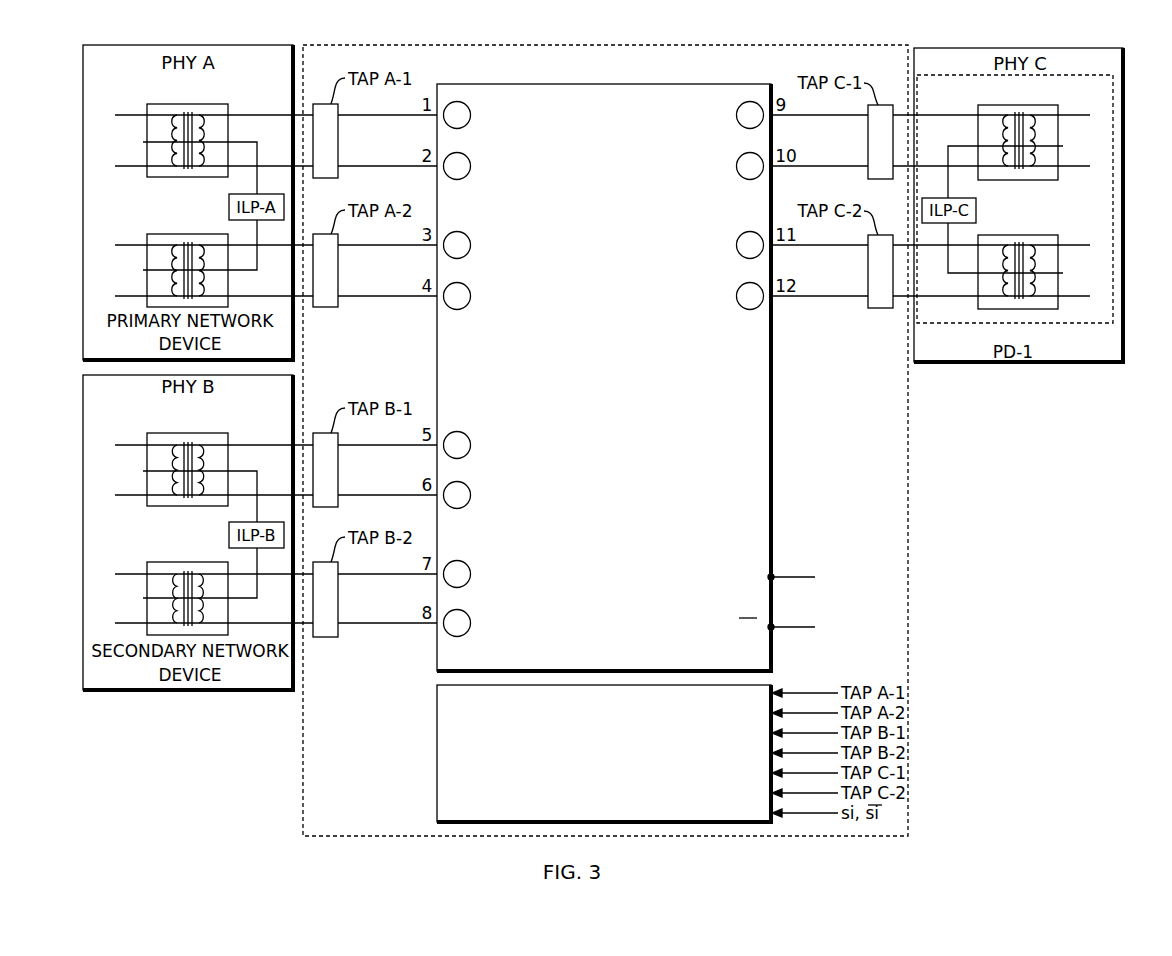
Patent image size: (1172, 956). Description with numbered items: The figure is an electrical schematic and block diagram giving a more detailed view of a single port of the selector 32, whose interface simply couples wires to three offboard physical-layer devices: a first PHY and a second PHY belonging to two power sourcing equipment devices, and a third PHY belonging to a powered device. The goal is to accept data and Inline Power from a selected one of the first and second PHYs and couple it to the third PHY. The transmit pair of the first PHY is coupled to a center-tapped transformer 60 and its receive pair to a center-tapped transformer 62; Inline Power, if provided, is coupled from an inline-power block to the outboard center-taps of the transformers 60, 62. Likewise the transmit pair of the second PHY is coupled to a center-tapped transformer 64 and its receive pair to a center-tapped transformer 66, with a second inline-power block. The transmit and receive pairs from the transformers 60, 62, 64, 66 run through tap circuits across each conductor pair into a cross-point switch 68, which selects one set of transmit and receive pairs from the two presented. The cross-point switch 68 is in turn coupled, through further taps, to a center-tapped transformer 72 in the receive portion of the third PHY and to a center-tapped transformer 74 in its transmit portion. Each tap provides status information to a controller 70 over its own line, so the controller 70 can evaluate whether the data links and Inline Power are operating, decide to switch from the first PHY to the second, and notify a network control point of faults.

The selector 32 is at (908, 470).
The center-tapped transformer 60 is at (147, 110).
The center-tapped transformer 62 is at (147, 240).
The center-tapped transformer 64 is at (147, 437).
The center-tapped transformer 66 is at (147, 567).
The cross-point switch 68 is at (772, 425).
The controller 70 is at (437, 742).
The center-tapped transformer 72 is at (1058, 111).
The center-tapped transformer 74 is at (1058, 240).